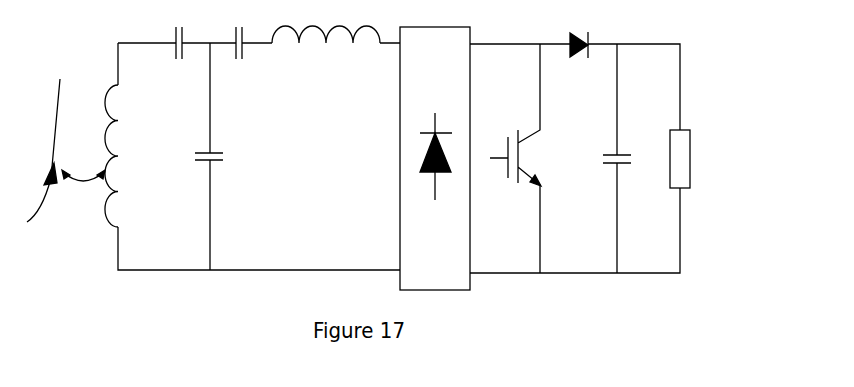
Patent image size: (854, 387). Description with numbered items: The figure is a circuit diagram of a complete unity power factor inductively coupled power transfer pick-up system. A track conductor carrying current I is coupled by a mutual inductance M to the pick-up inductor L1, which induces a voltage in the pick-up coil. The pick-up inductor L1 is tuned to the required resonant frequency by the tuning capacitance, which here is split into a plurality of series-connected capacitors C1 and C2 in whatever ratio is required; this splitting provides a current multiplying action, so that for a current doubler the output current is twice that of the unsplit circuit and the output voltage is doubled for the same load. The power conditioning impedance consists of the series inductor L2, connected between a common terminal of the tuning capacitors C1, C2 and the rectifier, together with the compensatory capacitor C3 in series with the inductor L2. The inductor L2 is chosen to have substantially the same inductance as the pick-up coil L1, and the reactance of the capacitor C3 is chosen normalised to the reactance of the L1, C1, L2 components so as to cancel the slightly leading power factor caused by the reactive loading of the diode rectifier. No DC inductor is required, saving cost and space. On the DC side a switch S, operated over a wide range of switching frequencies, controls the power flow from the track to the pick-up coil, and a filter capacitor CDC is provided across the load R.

The pick-up inductor L1 is at (126, 156).
The tuning capacitor C1 is at (221, 165).
The tuning capacitor C2 is at (177, 60).
The compensatory capacitor C3 is at (239, 60).
The series inductor L2 is at (326, 62).
The switch S is at (515, 158).
The filter capacitor CDC is at (598, 158).
The load R is at (671, 159).
The track current I is at (43, 150).
The mutual inductance M is at (83, 165).